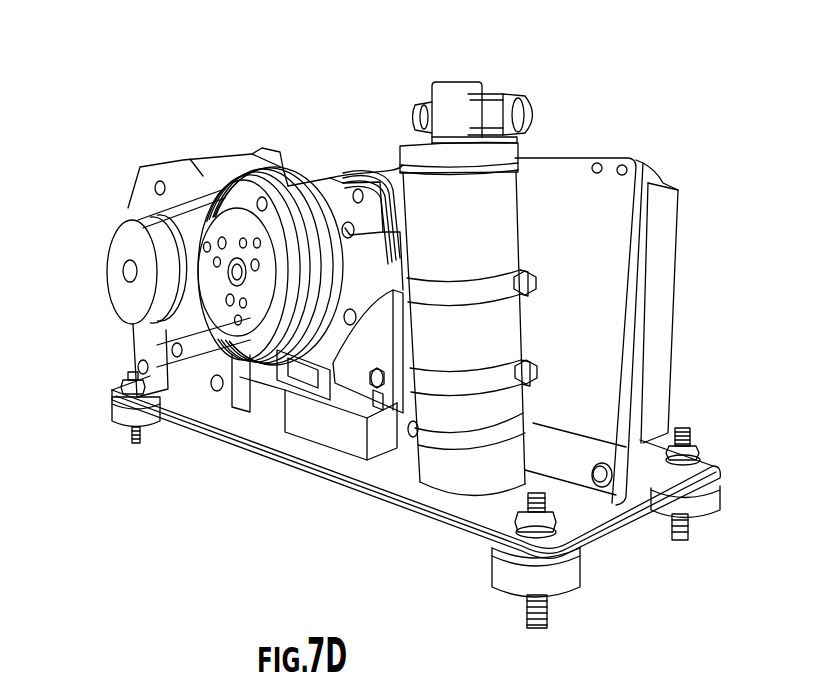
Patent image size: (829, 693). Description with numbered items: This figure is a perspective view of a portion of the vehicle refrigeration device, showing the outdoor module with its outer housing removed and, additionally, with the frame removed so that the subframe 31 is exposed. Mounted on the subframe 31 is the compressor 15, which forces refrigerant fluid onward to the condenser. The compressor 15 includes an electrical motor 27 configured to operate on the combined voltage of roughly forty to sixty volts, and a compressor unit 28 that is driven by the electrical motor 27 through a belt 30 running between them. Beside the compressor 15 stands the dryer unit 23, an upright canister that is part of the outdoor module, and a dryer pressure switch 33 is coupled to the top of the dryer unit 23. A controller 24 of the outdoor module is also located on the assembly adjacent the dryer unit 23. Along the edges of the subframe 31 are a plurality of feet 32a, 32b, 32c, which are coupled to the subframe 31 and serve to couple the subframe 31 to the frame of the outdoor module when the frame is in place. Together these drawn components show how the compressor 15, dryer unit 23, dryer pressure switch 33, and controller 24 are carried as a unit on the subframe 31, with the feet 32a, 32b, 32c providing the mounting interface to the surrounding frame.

The compressor 15 is at (280, 113).
The dryer unit 23 is at (503, 158).
The controller 24 is at (660, 262).
The electrical motor 27 is at (170, 158).
The compressor unit 28 is at (353, 337).
The belt 30 is at (205, 330).
The subframe 31 is at (427, 477).
The dryer pressure switch 33 is at (527, 107).
The foot 32a is at (716, 468).
The foot 32b is at (577, 565).
The foot 32c is at (117, 415).